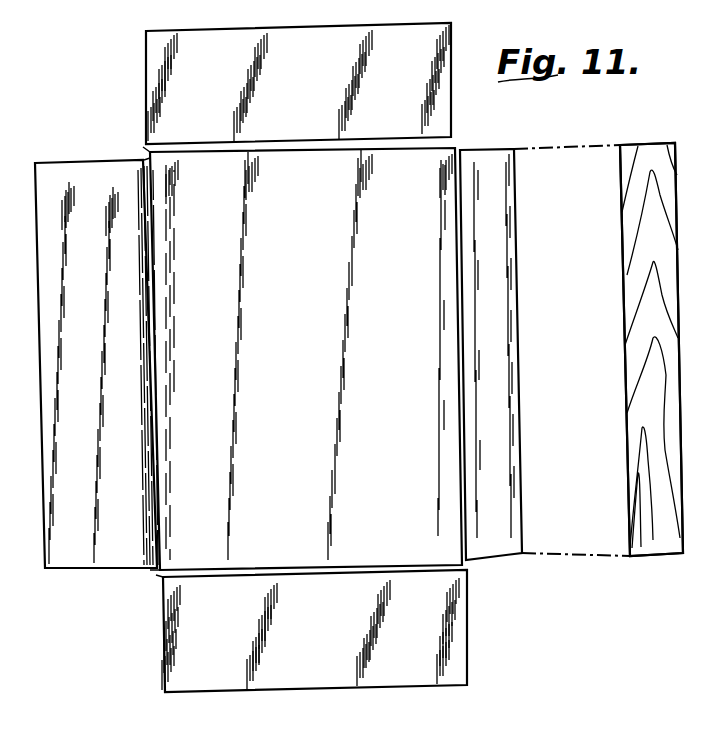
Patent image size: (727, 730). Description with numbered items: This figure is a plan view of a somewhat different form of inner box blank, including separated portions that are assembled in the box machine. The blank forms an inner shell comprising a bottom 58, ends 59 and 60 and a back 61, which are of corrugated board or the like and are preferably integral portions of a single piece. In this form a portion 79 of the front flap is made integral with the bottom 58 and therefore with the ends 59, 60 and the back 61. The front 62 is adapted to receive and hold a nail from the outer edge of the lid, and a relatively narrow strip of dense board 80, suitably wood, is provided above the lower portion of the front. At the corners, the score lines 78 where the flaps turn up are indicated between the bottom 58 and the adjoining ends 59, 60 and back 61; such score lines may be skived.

The bottom 58 is at (400, 198).
The end 59 is at (299, 673).
The end 60 is at (421, 49).
The back 61 is at (57, 405).
The front 62 is at (654, 380).
The score line 78 is at (147, 158).
The portion of the front flap 79 is at (505, 465).
The strip of dense board 80 is at (657, 422).